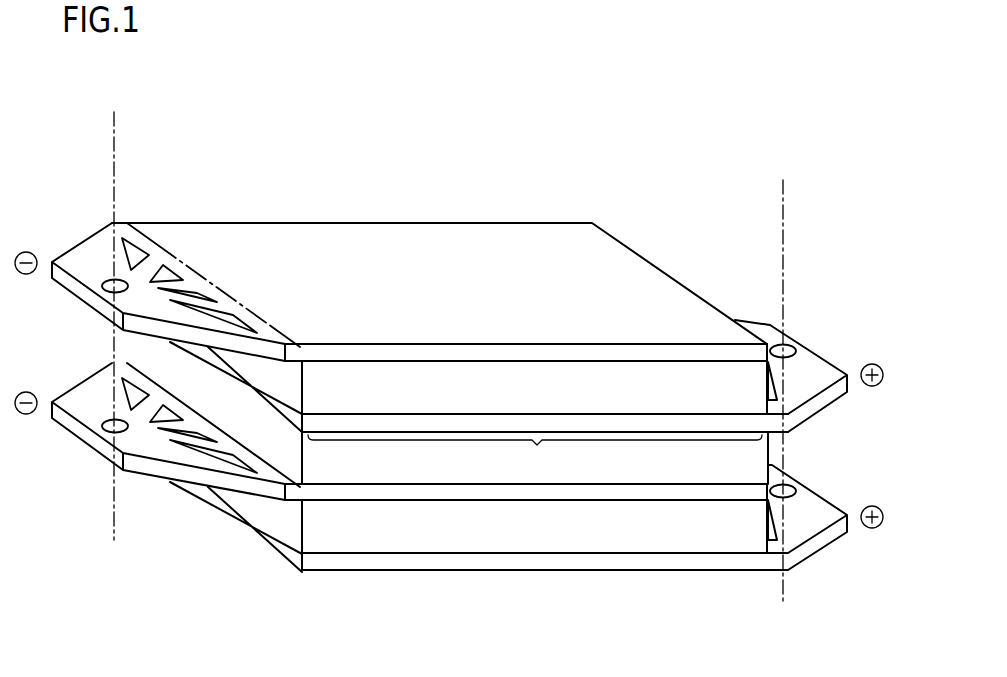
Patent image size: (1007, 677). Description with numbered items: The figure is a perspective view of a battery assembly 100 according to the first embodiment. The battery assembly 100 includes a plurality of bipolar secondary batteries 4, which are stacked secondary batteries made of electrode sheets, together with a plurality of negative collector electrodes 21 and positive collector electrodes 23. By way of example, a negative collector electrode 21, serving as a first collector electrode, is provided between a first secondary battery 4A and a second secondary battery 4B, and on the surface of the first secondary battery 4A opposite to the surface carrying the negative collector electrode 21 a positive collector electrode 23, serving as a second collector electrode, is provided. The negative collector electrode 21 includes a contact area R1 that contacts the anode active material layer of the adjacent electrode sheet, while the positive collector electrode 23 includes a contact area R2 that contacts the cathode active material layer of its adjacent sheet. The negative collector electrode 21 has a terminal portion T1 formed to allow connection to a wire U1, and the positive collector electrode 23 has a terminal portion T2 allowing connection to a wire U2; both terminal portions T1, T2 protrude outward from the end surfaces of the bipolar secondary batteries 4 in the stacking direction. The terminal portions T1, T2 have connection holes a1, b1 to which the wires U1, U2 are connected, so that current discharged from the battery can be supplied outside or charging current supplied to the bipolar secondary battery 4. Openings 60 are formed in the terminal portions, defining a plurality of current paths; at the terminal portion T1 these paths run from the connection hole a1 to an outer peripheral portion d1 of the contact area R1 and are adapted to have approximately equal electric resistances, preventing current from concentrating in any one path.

The battery assembly 100 is at (373, 130).
The bipolar secondary battery 4 is at (480, 390).
The first secondary battery 4A is at (348, 458).
The second secondary battery 4B is at (397, 527).
The negative collector electrode 21 is at (425, 353).
The positive collector electrode 23 is at (530, 423).
The openings 60 is at (174, 258).
The outer peripheral portion d1 is at (220, 287).
The terminal portion T1 is at (72, 287).
The terminal portion T2 is at (820, 402).
The connection hole a1 is at (110, 281).
The connection hole b1 is at (786, 346).
The wire U1 is at (114, 126).
The wire U2 is at (783, 192).
The contact area R1 is at (313, 260).
The contact area R2 is at (535, 456).